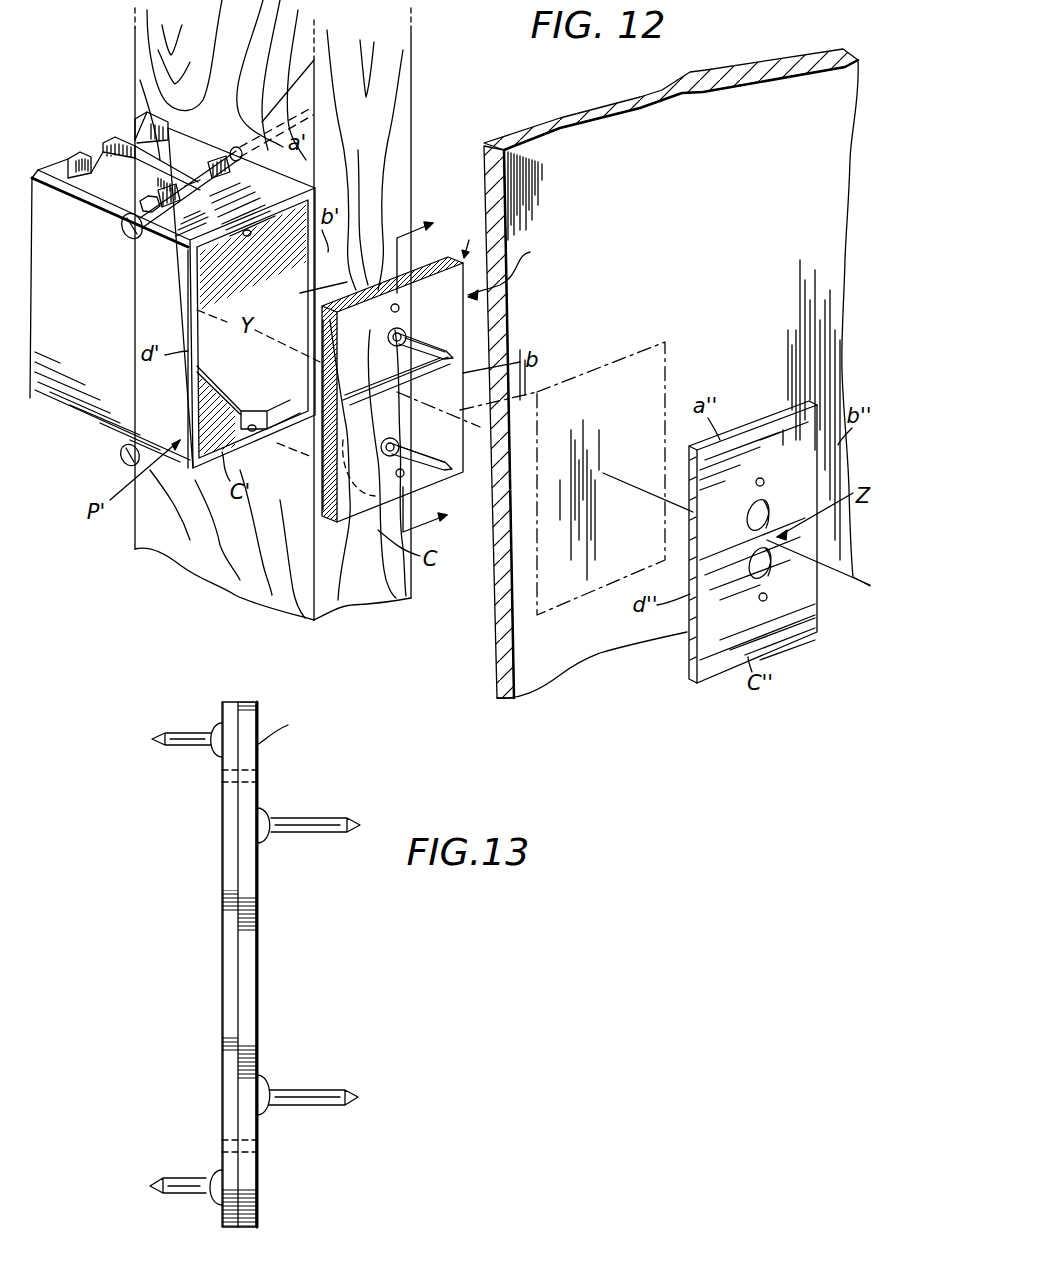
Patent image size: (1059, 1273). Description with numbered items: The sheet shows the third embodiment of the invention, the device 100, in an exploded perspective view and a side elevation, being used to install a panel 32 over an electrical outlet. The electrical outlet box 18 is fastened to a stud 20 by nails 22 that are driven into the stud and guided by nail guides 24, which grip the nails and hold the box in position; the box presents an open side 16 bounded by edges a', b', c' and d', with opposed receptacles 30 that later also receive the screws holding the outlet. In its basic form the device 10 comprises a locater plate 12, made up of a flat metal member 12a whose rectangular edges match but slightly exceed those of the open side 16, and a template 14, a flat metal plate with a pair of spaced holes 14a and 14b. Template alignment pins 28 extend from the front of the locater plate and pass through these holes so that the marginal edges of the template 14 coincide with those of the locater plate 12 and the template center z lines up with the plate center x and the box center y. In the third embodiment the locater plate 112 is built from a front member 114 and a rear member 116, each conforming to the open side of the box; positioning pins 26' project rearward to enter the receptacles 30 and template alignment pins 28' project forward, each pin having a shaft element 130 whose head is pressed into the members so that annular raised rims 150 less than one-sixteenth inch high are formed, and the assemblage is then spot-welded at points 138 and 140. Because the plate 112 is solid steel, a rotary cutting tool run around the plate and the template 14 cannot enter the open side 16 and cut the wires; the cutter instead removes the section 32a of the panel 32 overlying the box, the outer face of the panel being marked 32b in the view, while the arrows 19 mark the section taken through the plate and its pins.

In FIG. 12, the device 10 is at (307, 500).
In FIG. 12, the stud 20 is at (393, 62).
In FIG. 12, the locater plate 12 is at (512, 270).
In FIG. 12, the flat metal member 12a is at (438, 404).
In FIG. 12, the template 14 is at (726, 552).
In FIG. 12, the hole 14a is at (760, 477).
In FIG. 12, the hole 14b is at (758, 601).
In FIG. 12, the open side 16 is at (227, 290).
In FIG. 12, the electrical outlet box 18 is at (100, 413).
In FIG. 12, the section line 19 is at (436, 370).
In FIG. 12, the nails 22 is at (122, 234).
In FIG. 12, the nail guides 24 is at (183, 182).
In FIG. 12, the positioning pins 26' is at (319, 358).
In FIG. 13, the positioning pins 26' is at (180, 934).
In FIG. 12, the template alignment pins 28 is at (474, 391).
In FIG. 13, the template alignment pins 28' is at (322, 961).
In FIG. 12, the receptacles 30 is at (247, 229).
In FIG. 12, the panel 32 is at (677, 389).
In FIG. 12, the section of the panel 32a is at (692, 392).
In FIG. 12, the wall front surface 32b is at (733, 217).
In FIG. 12, the device 100 is at (412, 396).
In FIG. 13, the device 100 is at (212, 964).
In FIG. 13, the locater plate 112 is at (222, 919).
In FIG. 12, the front member 114 is at (519, 383).
In FIG. 13, the front member 114 is at (250, 965).
In FIG. 12, the rear member 116 is at (322, 370).
In FIG. 13, the rear member 116 is at (225, 1070).
In FIG. 12, the shaft element 130 is at (425, 345).
In FIG. 13, the shaft element 130 is at (190, 748).
In FIG. 12, the spot-weld point 138 is at (391, 312).
In FIG. 12, the spot-weld point 140 is at (396, 471).
In FIG. 12, the annular raised rim 150 is at (392, 396).
In FIG. 13, the annular raised rim 150 is at (215, 725).